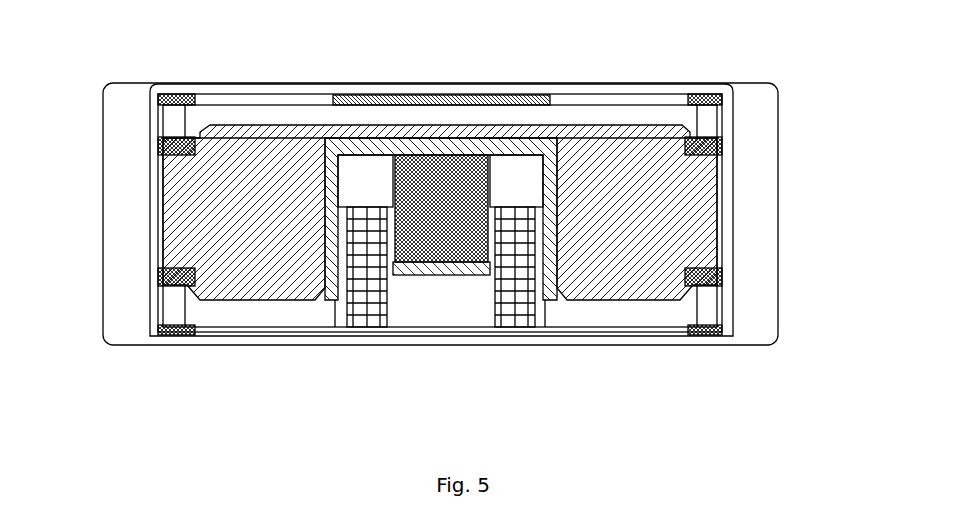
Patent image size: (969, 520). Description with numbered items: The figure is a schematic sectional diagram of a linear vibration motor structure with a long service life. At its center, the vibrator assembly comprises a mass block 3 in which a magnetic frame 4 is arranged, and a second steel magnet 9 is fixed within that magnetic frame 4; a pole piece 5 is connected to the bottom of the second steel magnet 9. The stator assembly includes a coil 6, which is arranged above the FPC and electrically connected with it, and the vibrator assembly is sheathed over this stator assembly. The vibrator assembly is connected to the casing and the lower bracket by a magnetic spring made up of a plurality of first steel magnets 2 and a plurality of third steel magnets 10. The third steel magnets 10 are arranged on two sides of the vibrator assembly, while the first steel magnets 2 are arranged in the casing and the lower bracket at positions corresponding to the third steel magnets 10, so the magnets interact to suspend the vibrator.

The first steel magnet 2 is at (690, 100).
The mass block 3 is at (640, 138).
The magnetic frame 4 is at (551, 280).
The pole piece 5 is at (464, 276).
The coil 6 is at (374, 324).
The second steel magnet 9 is at (420, 250).
The third steel magnet 10 is at (172, 278).